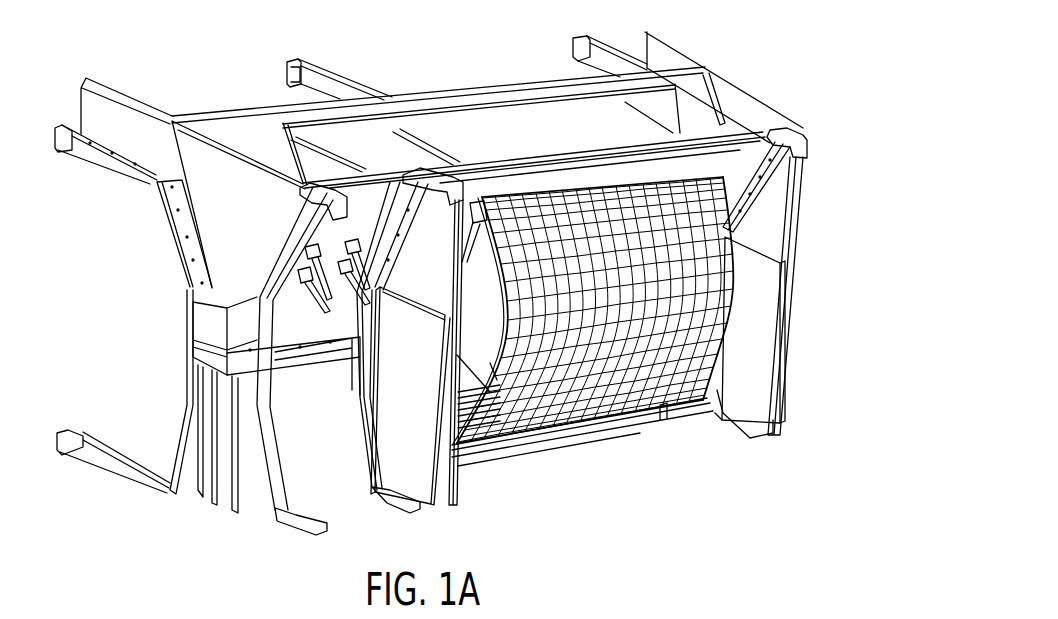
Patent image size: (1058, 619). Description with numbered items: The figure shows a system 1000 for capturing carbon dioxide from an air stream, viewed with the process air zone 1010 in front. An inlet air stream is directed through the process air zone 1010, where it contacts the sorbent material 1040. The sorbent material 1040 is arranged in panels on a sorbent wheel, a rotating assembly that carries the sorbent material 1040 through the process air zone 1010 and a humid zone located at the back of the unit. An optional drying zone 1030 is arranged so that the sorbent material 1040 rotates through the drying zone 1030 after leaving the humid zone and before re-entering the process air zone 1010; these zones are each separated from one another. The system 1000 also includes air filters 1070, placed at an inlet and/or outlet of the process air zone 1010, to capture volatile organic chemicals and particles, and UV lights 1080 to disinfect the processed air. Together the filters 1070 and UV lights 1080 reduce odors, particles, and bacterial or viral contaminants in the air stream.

The system 1000 is at (167, 47).
The drying zone 1030 is at (640, 132).
The process air zone 1010 is at (797, 308).
The air filters 1070 is at (417, 383).
The sorbent material 1040 is at (603, 330).
The UV lights 1080 is at (307, 265).